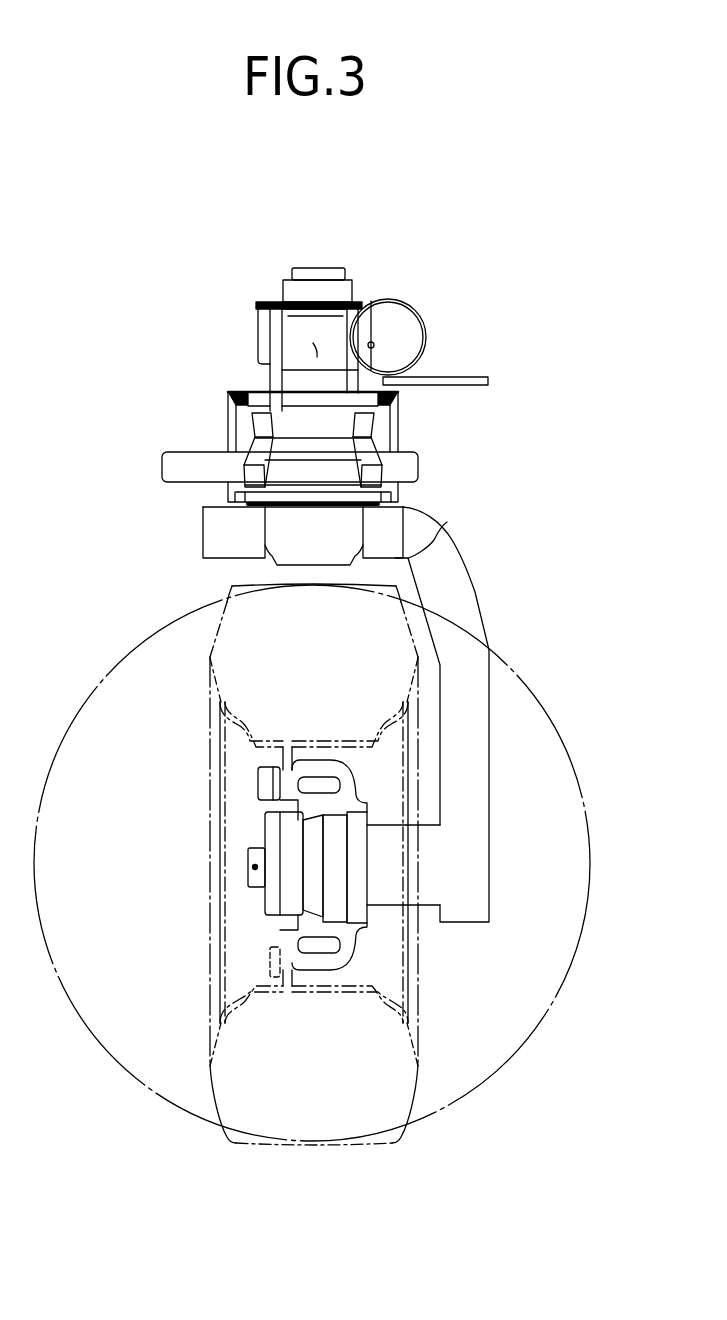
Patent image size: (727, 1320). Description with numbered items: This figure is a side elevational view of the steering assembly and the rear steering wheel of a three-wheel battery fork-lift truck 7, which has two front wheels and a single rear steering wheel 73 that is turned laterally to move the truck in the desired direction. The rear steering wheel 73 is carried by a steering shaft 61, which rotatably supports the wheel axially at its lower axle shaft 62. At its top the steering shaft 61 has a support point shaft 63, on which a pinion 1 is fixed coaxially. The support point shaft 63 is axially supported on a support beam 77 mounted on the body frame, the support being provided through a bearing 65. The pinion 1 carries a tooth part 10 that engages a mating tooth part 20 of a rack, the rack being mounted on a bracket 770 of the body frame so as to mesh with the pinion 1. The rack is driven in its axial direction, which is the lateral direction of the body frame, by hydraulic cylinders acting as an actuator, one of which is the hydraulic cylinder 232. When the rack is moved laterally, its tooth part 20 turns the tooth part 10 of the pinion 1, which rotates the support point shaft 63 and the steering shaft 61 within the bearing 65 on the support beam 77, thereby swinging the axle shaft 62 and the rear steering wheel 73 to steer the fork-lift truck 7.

The pinion 1 is at (260, 323).
The tooth part 10 is at (390, 302).
The hydraulic cylinder 232 is at (400, 323).
The three-wheel battery fork-lift truck 7 is at (405, 313).
The tooth part 20 is at (376, 347).
The bracket 770 is at (488, 380).
The support point shaft 63 is at (268, 373).
The support beam 77 is at (181, 456).
The bearing 65 is at (400, 418).
The steering shaft 61 is at (470, 788).
The axle shaft 62 is at (383, 892).
The rear steering wheel 73 is at (210, 893).